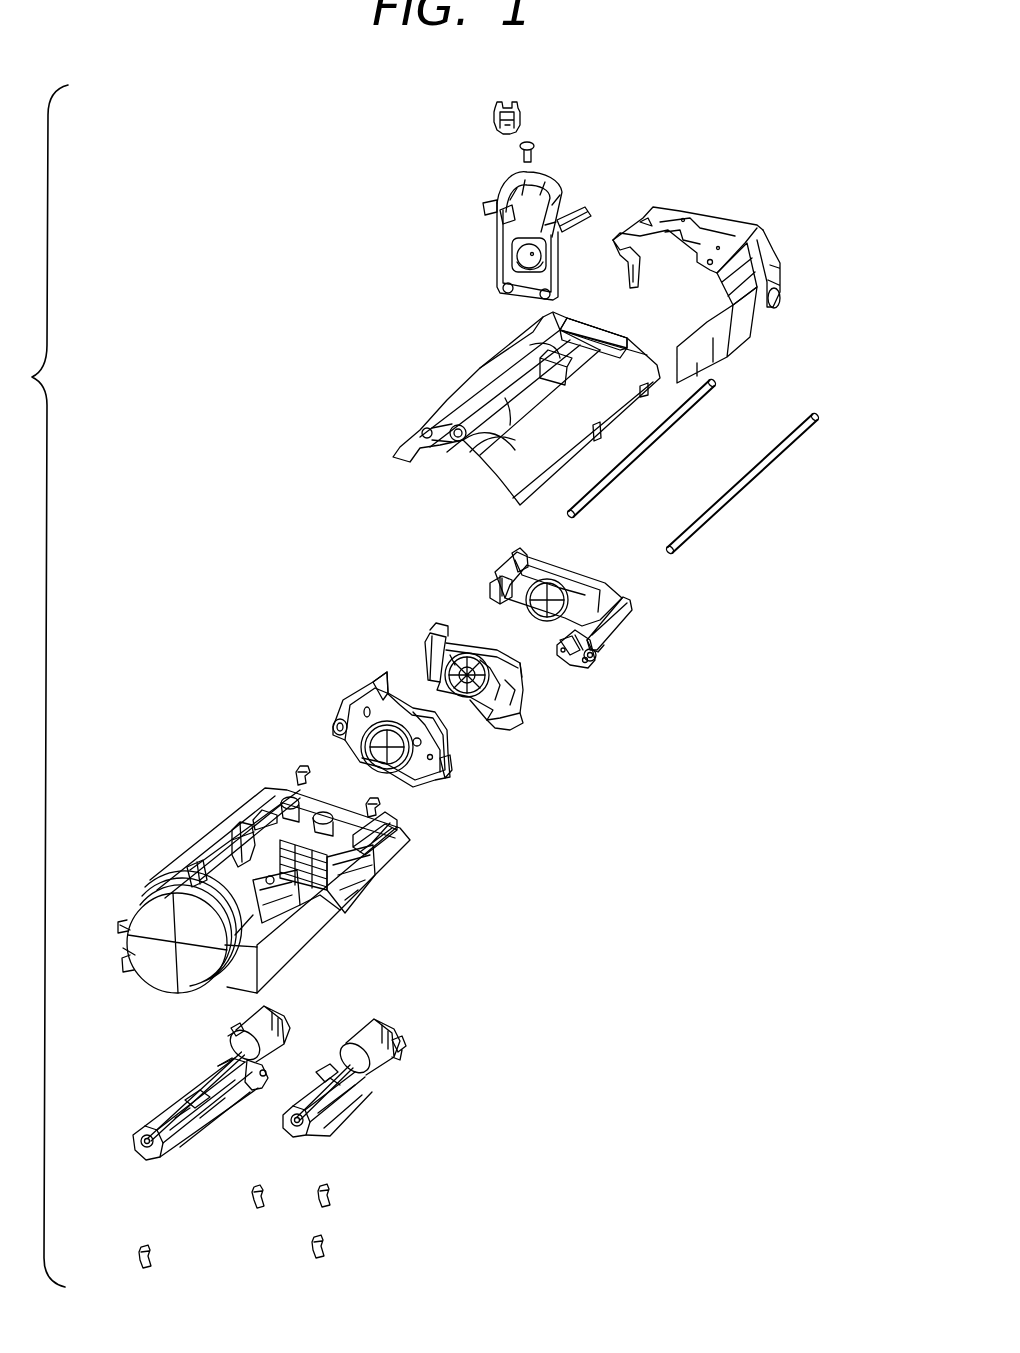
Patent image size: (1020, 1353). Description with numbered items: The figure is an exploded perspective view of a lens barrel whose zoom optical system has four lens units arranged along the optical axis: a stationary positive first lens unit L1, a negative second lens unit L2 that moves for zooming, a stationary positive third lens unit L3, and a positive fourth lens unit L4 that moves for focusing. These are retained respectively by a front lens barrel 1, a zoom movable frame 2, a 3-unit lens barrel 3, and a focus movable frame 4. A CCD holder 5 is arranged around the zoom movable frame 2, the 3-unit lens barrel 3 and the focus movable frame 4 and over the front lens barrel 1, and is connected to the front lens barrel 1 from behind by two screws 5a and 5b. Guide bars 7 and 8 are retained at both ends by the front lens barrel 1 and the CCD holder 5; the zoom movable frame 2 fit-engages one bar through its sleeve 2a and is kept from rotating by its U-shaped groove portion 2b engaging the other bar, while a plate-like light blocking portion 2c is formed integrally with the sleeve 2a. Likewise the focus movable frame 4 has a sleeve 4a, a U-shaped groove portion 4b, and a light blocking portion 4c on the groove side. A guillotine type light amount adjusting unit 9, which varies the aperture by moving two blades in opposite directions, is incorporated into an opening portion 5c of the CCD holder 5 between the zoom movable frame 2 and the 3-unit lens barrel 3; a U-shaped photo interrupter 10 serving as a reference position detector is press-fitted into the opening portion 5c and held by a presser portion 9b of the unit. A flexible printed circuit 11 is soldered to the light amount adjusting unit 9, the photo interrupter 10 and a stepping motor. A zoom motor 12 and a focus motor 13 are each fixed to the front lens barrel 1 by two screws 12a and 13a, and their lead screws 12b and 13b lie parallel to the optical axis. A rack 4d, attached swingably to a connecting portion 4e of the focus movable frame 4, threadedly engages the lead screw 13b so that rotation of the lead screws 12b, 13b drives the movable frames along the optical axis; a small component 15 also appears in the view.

The front lens barrel 1 is at (305, 940).
The first lens unit L1 is at (150, 955).
The zoom movable frame 2 is at (422, 770).
The sleeve 2a is at (333, 725).
The U-shaped groove portion 2b is at (448, 757).
The light blocking portion 2c is at (383, 676).
The second lens unit L2 is at (362, 762).
The 3-unit lens barrel 3 is at (425, 640).
The third lens unit L3 is at (458, 712).
The focus movable frame 4 is at (578, 598).
The sleeve 4a is at (622, 603).
The U-shaped groove portion 4b is at (515, 555).
The light blocking portion 4c is at (500, 575).
The rack 4d is at (610, 650).
The connecting portion 4e is at (568, 660).
The fourth lens unit L4 is at (520, 612).
The CCD holder 5 is at (447, 415).
The screw 5a is at (298, 772).
The screw 5b is at (380, 808).
The opening portion 5c is at (612, 335).
The guide bar 7 is at (640, 458).
The guide bar 8 is at (748, 485).
The light amount adjusting unit 9 is at (557, 195).
The presser portion 9b is at (498, 193).
The photo interrupter 10 is at (522, 120).
The flexible printed circuit 11 is at (728, 236).
The zoom motor 12 is at (275, 1025).
The screw 12a is at (152, 1256).
The lead screw 12b is at (200, 1090).
The focus motor 13 is at (384, 1042).
The screw 13a is at (325, 1247).
The lead screw 13b is at (342, 1097).
The sensor 15 is at (594, 662).